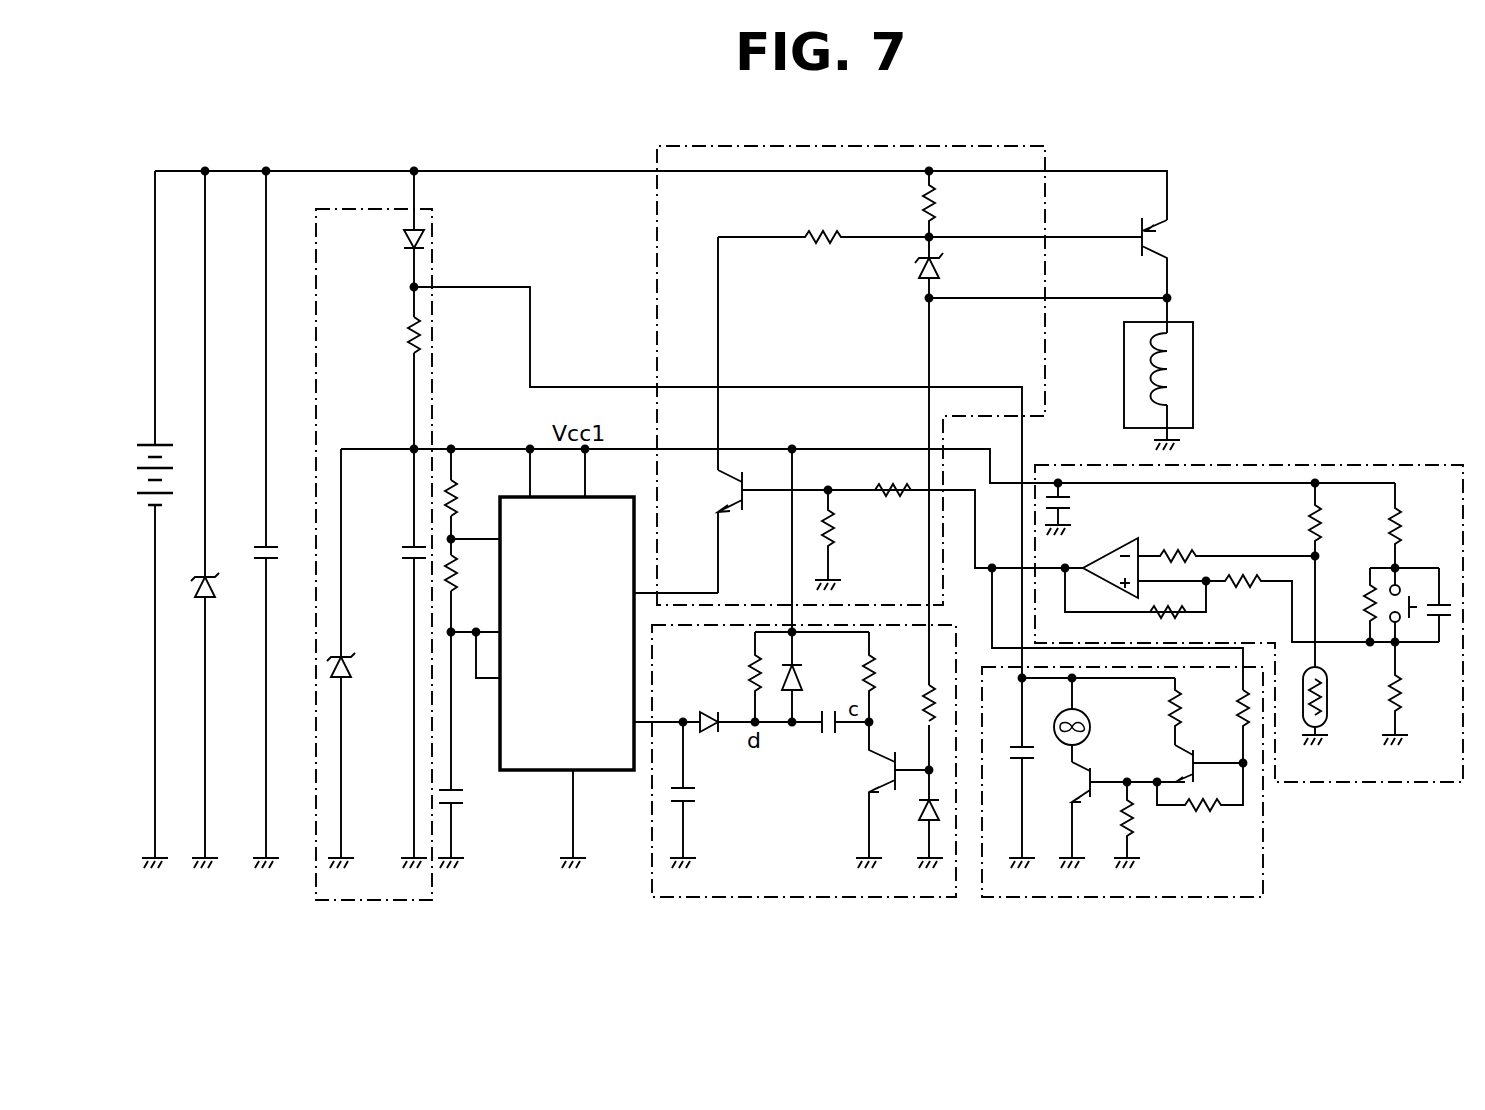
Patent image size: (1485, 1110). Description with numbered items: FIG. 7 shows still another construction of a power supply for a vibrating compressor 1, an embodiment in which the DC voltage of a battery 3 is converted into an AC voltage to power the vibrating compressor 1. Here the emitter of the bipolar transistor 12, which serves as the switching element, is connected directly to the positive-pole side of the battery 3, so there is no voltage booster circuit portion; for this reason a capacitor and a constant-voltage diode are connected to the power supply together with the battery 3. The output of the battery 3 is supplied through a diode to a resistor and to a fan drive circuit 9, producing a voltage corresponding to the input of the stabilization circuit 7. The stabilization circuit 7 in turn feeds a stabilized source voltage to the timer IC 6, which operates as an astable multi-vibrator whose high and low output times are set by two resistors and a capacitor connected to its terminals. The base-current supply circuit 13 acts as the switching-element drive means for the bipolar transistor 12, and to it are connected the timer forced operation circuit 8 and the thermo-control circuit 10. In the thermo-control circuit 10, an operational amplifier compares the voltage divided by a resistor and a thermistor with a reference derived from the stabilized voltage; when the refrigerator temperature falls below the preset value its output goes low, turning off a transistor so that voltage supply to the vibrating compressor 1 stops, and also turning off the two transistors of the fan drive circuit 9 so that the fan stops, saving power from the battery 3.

The vibrating compressor 1 is at (1124, 380).
The battery 3 is at (159, 445).
The timer IC 6 is at (596, 497).
The stabilization circuit 7 is at (436, 220).
The timer forced operation circuit 8 is at (652, 882).
The fan drive circuit 9 is at (1307, 857).
The thermo-control circuit 10 is at (1417, 808).
The bipolar transistor 12 is at (1166, 242).
The base-current supply circuit 13 is at (657, 230).